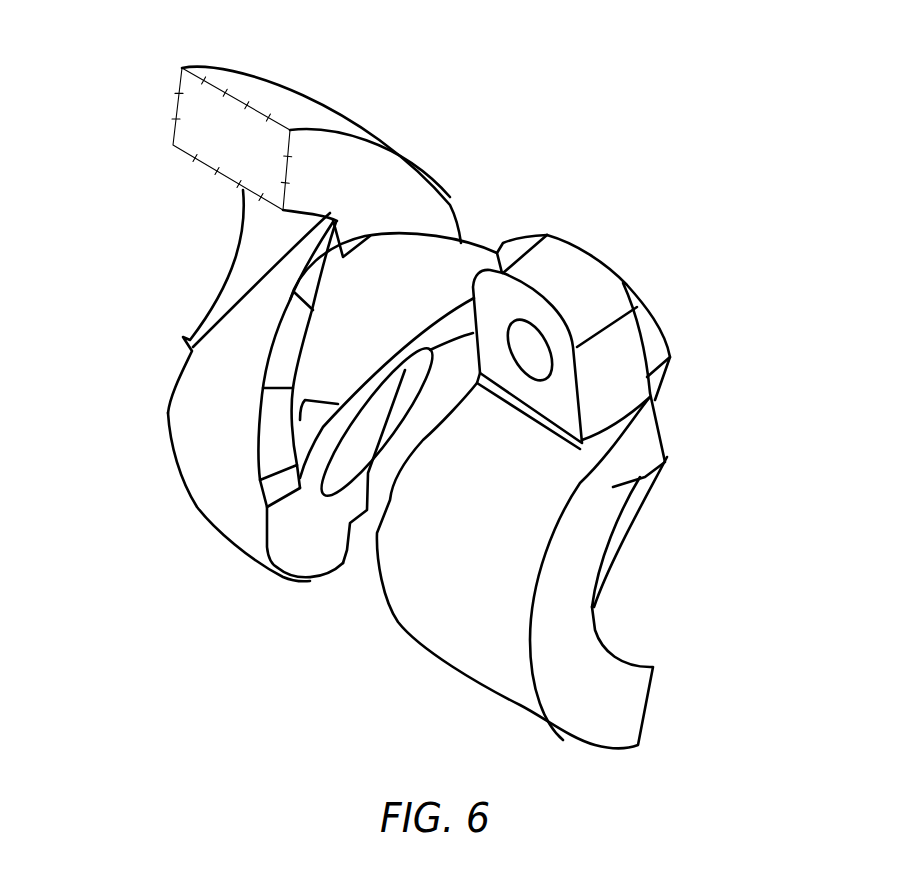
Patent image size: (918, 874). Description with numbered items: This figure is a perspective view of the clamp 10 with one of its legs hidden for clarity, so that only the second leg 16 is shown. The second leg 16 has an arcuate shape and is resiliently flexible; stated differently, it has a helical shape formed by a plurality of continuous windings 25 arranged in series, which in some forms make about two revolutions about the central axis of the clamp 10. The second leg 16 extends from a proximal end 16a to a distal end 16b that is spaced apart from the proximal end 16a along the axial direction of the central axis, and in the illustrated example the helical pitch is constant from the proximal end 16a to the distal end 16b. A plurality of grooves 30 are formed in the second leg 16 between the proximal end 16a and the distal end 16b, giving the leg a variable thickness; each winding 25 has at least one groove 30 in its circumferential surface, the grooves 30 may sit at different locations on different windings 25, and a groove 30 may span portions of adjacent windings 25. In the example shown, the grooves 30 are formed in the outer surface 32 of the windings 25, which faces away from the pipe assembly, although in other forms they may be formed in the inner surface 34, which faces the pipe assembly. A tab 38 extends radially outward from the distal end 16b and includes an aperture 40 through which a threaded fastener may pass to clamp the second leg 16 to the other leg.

The clamp 10 is at (180, 212).
The second leg 16 is at (210, 445).
The proximal end 16a is at (215, 128).
The distal end 16b is at (493, 523).
The continuous windings 25 is at (385, 157).
The grooves 30 is at (397, 290).
The outer surface 32 is at (480, 603).
The inner surface 34 is at (257, 247).
The tab 38 is at (612, 353).
The aperture 40 is at (533, 350).